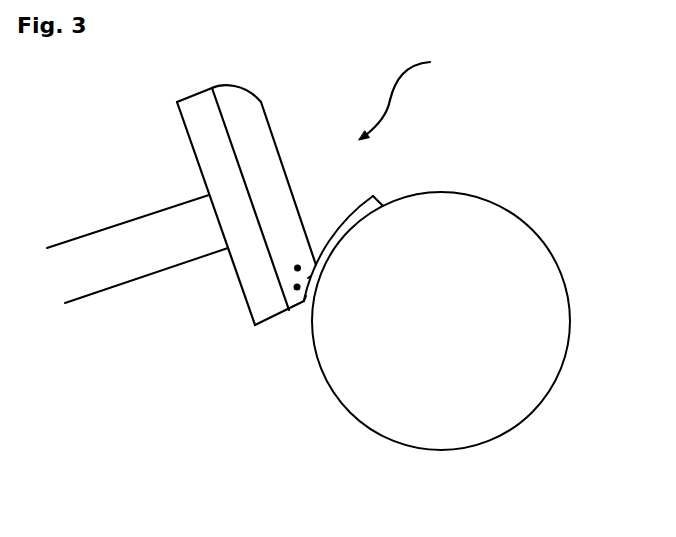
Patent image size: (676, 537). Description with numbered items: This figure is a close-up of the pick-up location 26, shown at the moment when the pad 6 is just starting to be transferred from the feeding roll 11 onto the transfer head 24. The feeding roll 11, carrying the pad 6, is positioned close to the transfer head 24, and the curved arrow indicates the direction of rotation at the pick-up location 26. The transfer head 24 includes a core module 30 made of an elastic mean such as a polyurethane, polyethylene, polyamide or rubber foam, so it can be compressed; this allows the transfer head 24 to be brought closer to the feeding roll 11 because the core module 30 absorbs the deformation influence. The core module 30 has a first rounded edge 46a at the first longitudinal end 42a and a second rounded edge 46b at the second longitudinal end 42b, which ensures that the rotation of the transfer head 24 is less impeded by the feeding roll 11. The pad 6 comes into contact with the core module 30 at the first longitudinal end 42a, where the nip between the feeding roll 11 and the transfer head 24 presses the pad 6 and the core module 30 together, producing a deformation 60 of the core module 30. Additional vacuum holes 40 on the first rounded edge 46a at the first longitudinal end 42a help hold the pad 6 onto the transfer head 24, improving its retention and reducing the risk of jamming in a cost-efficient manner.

The pad 6 is at (362, 210).
The feeding roll 11 is at (487, 270).
The transfer head 24 is at (213, 172).
The pick-up location 26 is at (414, 95).
The core module 30 is at (273, 172).
The additional vacuum holes 40 is at (298, 267).
The first longitudinal end 42a is at (263, 323).
The second longitudinal end 42b is at (203, 90).
The first rounded edge 46a is at (304, 301).
The second rounded edge 46b is at (243, 91).
The deformation 60 is at (308, 278).